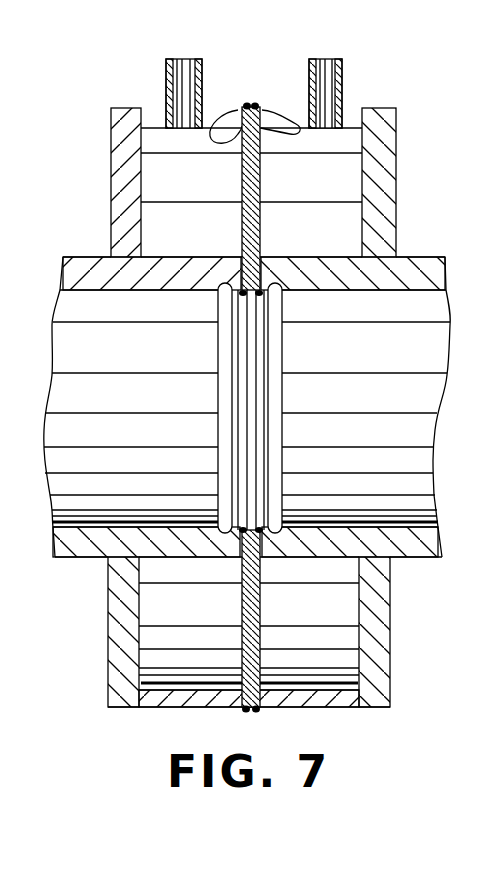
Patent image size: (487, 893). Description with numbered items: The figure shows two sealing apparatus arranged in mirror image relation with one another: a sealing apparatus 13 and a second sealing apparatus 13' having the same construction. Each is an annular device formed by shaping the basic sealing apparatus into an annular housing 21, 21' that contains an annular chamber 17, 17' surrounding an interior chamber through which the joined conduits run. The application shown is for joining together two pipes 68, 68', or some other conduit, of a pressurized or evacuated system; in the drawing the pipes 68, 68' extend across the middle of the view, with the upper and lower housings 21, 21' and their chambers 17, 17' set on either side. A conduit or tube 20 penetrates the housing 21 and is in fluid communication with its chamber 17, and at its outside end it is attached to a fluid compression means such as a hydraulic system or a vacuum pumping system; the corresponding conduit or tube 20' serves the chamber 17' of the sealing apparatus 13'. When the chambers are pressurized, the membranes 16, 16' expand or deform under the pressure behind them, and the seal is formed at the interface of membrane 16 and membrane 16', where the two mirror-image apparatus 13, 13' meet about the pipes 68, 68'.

The sealing apparatus 13 is at (89, 437).
The sealing apparatus 13' is at (417, 439).
The membrane 16 is at (228, 104).
The membrane 16' is at (280, 97).
The annular chamber 17 is at (190, 409).
The annular chamber 17' is at (311, 409).
The conduit or tube 20 is at (156, 93).
The conduit or tube 20' is at (352, 90).
The annular housing 21 is at (102, 178).
The annular housing 21' is at (411, 169).
The pipe 68 is at (142, 407).
The pipe 68' is at (355, 407).